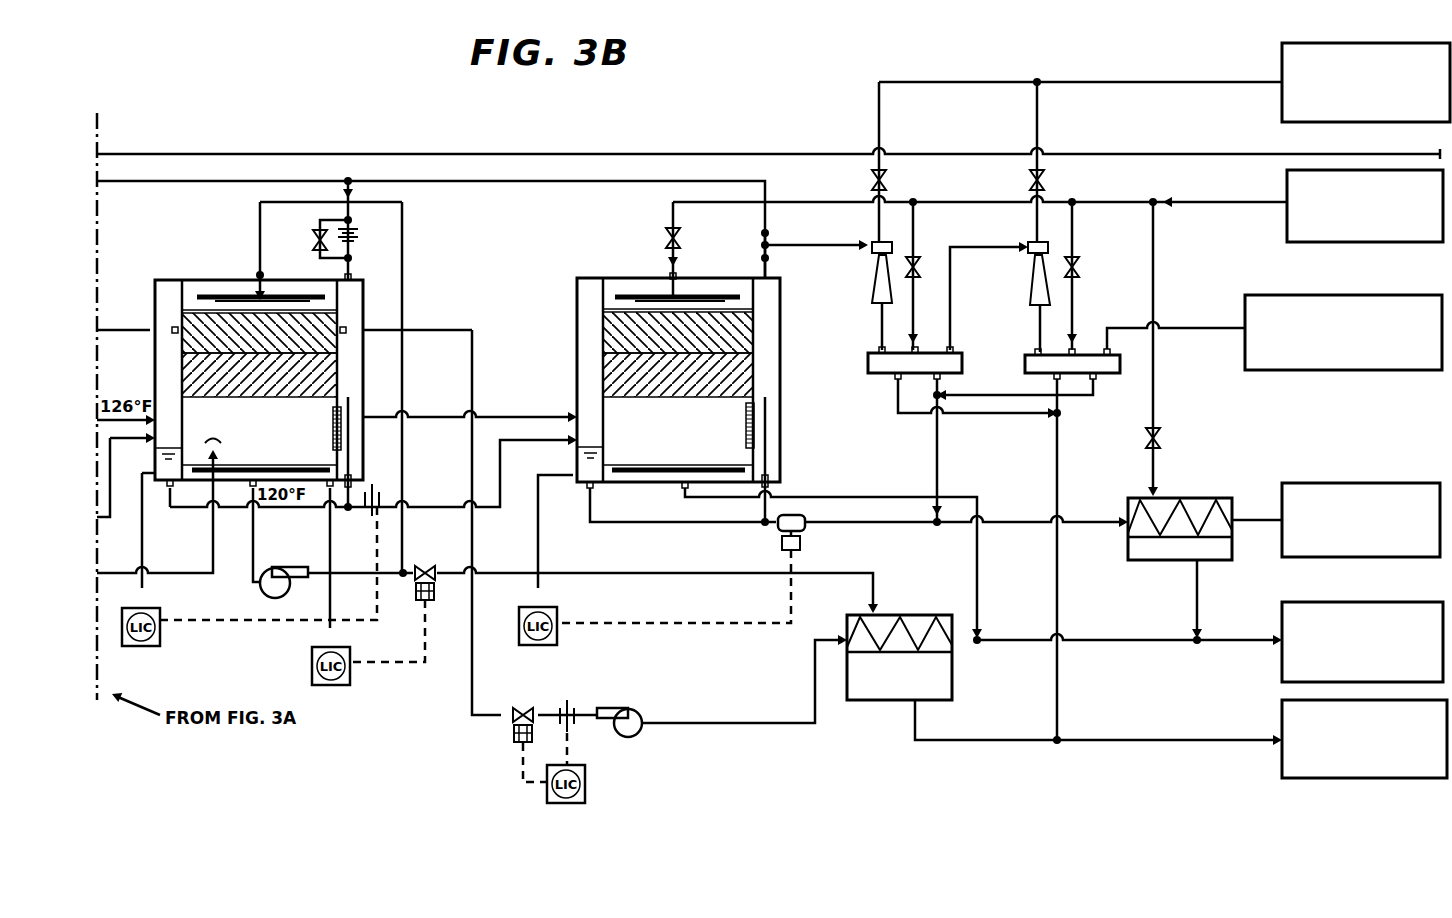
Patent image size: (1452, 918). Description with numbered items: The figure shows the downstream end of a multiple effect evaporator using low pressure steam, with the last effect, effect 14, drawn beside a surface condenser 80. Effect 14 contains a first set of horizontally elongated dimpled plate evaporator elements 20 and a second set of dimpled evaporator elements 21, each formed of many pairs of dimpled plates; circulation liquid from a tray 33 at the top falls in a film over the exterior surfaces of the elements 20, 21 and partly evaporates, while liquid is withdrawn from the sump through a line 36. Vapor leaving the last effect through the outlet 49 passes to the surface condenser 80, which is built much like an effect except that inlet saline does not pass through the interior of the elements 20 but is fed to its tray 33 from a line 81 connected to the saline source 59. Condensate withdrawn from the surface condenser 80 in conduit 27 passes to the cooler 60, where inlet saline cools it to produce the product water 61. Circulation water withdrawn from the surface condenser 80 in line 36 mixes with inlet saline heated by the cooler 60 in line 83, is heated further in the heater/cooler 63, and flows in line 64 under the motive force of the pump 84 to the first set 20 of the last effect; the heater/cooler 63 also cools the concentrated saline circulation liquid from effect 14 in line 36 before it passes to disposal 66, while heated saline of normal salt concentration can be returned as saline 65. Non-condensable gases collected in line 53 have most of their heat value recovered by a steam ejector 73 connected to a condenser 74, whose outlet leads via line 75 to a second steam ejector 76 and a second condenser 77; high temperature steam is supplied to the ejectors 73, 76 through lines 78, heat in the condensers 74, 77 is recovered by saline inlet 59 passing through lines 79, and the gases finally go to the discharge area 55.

The effect 14 is at (259, 391).
The first set of horizontally elongated dimpled plate evaporator elements 20 is at (330, 322).
The second set of horizontally elongated dimpled evaporator elements 21 is at (330, 372).
The conduit 27 is at (650, 526).
The tray 33 is at (633, 255).
The line 36 is at (187, 573).
The outlet 49 is at (418, 415).
The line 53 is at (495, 181).
The discharge area 55 is at (1320, 371).
The source 59 is at (1287, 243).
The cooler 60 is at (1175, 498).
The product water 61 is at (1355, 483).
The heater/cooler 63 is at (908, 617).
The line 64 is at (475, 665).
The normal salt concentration saline 65 is at (1282, 622).
The disposal 66 is at (1282, 722).
The steam ejector 73 is at (872, 298).
The condenser 74 is at (868, 360).
The line 75 is at (1027, 238).
The second steam ejector 76 is at (1032, 288).
The second condenser 77 is at (1025, 360).
The lines 78 is at (879, 117).
The lines 79 is at (927, 292).
The surface condenser 80 is at (787, 354).
The line 81 is at (853, 200).
The line 83 is at (1017, 637).
The pump 84 is at (627, 709).